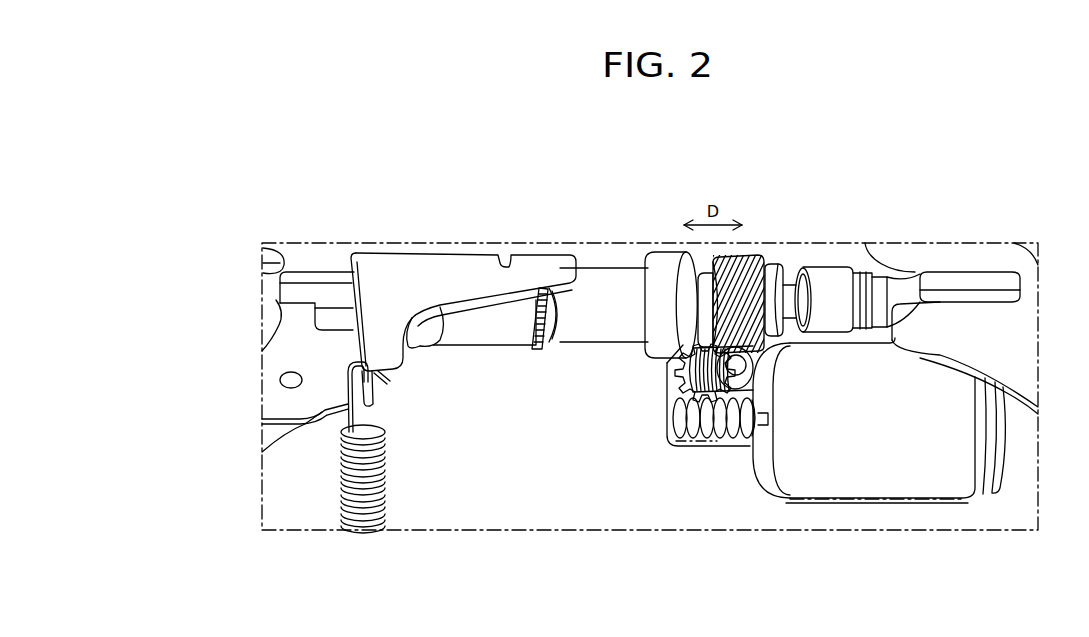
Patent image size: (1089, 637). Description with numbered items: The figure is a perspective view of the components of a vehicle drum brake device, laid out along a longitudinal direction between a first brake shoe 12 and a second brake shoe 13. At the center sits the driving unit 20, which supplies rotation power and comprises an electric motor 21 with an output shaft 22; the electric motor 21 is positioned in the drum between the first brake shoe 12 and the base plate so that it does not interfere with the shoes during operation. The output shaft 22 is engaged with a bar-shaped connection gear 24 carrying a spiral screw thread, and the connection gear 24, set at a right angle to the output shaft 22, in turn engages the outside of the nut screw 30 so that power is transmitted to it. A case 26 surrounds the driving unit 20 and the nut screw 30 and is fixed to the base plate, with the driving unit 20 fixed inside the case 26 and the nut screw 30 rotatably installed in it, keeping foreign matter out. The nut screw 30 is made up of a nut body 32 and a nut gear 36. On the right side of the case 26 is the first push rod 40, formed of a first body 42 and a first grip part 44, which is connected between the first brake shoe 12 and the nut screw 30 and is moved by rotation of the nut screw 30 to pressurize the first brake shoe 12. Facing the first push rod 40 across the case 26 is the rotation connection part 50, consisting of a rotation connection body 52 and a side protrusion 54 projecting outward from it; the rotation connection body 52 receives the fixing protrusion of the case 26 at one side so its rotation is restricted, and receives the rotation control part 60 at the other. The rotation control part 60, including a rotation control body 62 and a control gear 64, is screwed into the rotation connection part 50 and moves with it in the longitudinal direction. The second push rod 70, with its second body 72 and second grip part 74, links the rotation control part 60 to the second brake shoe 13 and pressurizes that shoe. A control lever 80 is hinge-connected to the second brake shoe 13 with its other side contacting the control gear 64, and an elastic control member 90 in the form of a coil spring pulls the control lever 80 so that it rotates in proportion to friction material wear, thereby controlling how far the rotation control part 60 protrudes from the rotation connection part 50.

The first brake shoe 12 is at (1008, 326).
The second brake shoe 13 is at (274, 311).
The driving unit 20 is at (840, 460).
The electric motor 21 is at (923, 478).
The output shaft 22 is at (718, 450).
The connection gear 24 is at (690, 372).
The case 26 is at (838, 503).
The nut screw 30 is at (744, 262).
The nut body 32 is at (773, 298).
The nut gear 36 is at (748, 278).
The first push rod 40 is at (909, 265).
The first body 42 is at (797, 300).
The first grip part 44 is at (958, 282).
The rotation connection part 50 is at (628, 263).
The rotation connection body 52 is at (612, 278).
The side protrusion 54 is at (671, 276).
The rotation control part 60 is at (522, 361).
The rotation control body 62 is at (554, 308).
The control gear 64 is at (533, 348).
The second push rod 70 is at (428, 287).
The second body 72 is at (443, 302).
The second grip part 74 is at (327, 275).
The control lever 80 is at (543, 272).
The elastic control member 90 is at (385, 473).